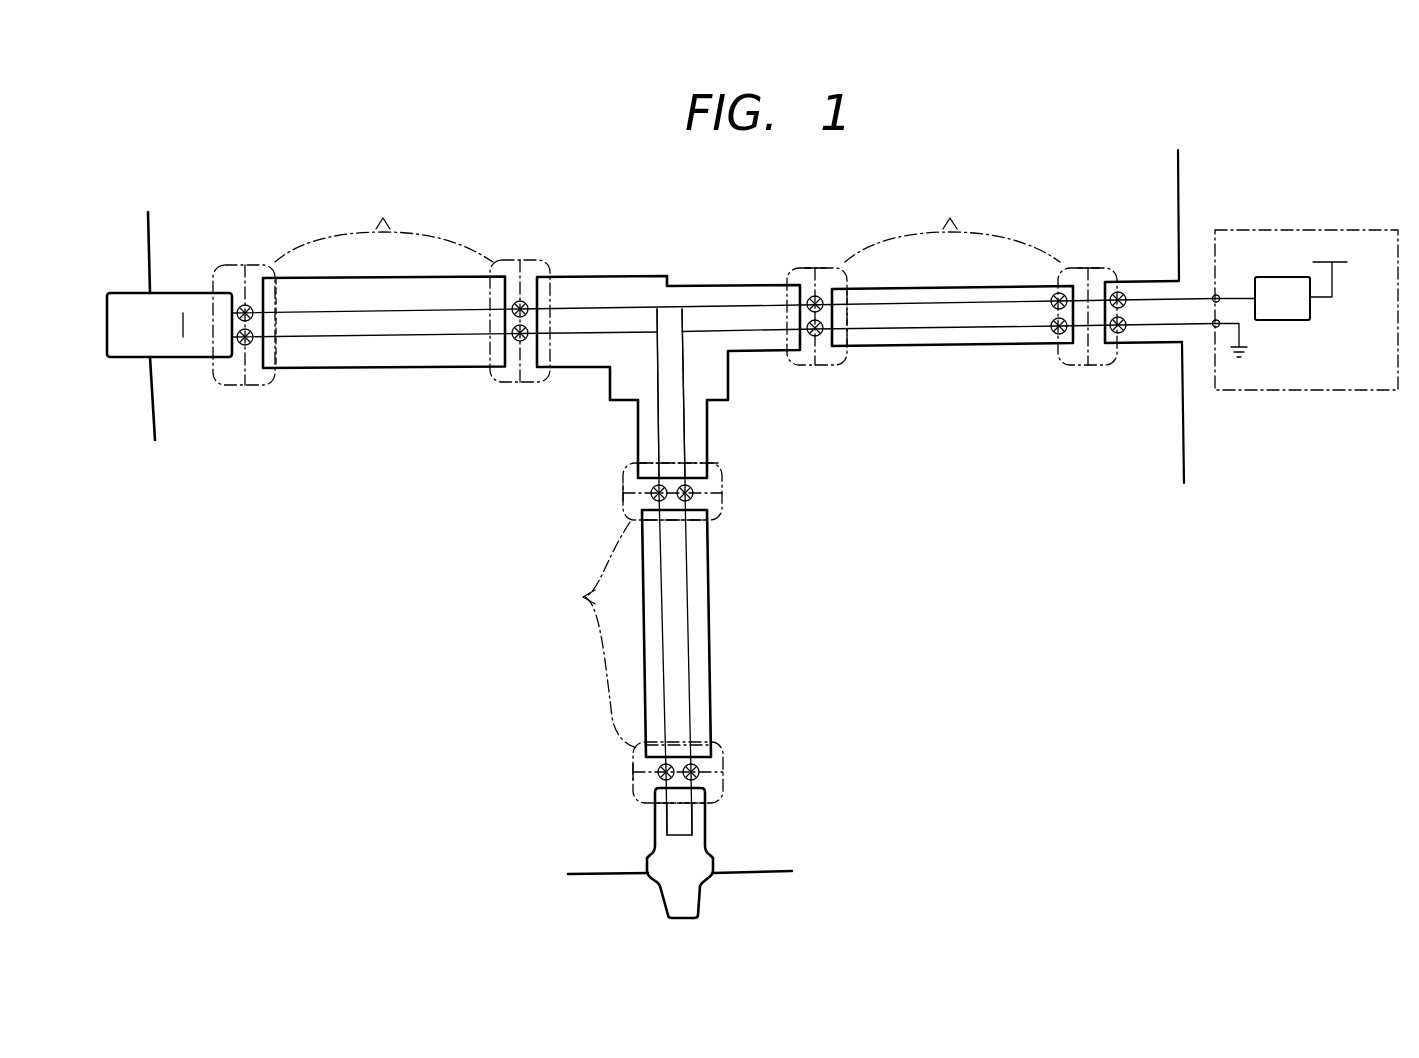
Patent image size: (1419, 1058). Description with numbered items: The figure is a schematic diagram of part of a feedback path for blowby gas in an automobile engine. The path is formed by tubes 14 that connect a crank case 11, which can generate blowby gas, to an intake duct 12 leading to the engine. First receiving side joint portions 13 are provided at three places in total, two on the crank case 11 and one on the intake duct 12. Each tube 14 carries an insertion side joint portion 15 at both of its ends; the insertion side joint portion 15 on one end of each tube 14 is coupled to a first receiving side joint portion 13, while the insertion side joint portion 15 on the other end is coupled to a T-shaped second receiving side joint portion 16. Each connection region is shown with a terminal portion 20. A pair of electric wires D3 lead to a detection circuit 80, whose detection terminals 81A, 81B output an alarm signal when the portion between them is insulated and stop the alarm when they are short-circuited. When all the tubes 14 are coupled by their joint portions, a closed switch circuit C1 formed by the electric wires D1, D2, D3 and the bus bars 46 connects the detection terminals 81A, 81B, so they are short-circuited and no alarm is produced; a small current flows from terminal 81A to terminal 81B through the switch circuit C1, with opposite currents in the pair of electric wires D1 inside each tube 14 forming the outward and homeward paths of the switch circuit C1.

The crank case 11 is at (146, 233).
The intake duct 12 is at (1183, 470).
The first receiving side joint portion 13 is at (225, 265).
The tube 14 is at (412, 368).
The insertion side joint portion 15 is at (667, 469).
The second receiving side joint portion 16 is at (640, 285).
The terminal unit 20 is at (170, 293).
The bus bar 46 is at (680, 305).
The detection circuit 80 is at (1332, 392).
The detection terminal 81A is at (1215, 295).
The detection terminal 81B is at (1217, 330).
The switch circuit C1 is at (701, 571).
The electric wire D1 is at (345, 337).
The electric wire D2 is at (192, 358).
The electric wire D3 is at (1200, 323).